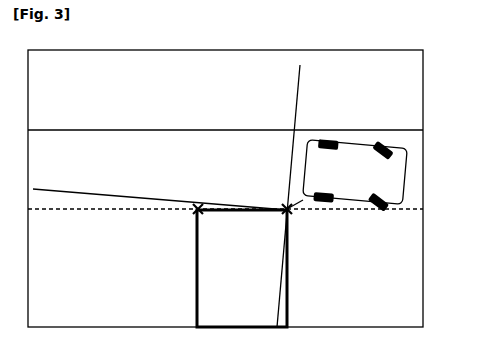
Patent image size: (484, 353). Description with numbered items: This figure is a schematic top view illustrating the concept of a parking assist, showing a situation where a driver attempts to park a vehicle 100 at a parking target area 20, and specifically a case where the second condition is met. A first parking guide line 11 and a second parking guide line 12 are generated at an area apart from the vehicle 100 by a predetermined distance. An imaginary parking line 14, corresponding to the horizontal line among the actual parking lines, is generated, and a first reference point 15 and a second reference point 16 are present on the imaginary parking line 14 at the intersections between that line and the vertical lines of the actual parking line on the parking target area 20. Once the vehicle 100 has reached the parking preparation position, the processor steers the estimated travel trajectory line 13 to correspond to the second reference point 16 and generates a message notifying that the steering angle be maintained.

The first parking guide line 11 is at (107, 194).
The second parking guide line 12 is at (297, 78).
The estimated travel trajectory line 13 is at (287, 207).
The imaginary parking line 14 is at (104, 211).
The first reference point 15 is at (195, 214).
The second reference point 16 is at (283, 213).
The parking target area 20 is at (289, 278).
The vehicle 100 is at (353, 143).